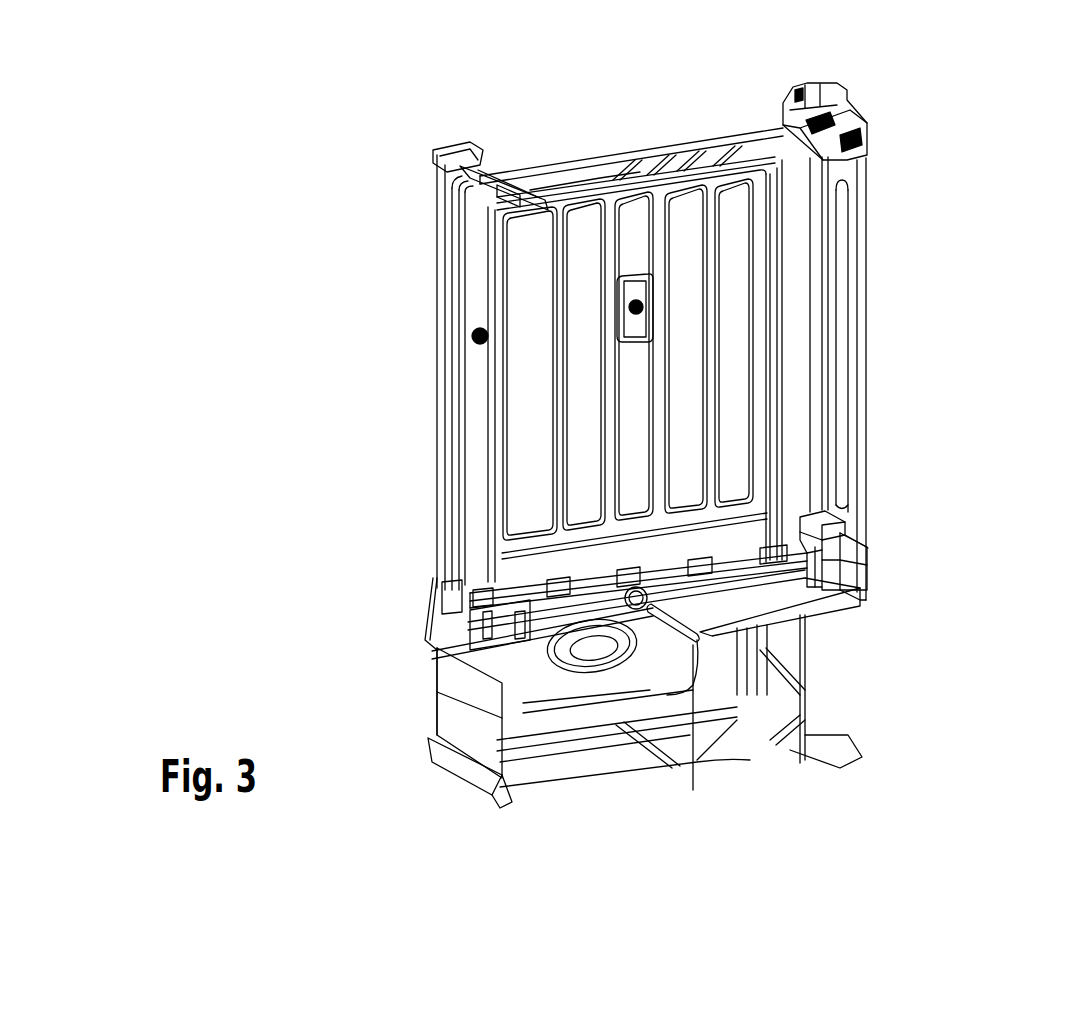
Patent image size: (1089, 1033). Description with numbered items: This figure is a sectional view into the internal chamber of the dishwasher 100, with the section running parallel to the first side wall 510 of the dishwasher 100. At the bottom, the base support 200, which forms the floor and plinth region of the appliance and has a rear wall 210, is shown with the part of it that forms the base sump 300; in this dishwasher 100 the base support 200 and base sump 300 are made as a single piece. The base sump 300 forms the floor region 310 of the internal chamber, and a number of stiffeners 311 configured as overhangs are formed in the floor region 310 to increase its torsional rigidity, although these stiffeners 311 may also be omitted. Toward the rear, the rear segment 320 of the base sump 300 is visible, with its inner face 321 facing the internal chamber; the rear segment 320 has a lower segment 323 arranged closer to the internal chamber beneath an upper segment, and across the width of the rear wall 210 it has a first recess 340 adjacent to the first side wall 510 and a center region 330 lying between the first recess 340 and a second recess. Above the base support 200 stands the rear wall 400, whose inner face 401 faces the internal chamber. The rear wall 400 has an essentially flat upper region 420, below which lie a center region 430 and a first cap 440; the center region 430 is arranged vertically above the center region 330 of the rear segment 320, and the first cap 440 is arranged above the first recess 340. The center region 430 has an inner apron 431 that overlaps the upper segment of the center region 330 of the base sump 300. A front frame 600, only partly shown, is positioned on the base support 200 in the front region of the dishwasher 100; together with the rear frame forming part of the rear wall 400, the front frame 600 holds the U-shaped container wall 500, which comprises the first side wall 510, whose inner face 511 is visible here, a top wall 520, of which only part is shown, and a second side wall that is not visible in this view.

The dishwasher 100 is at (314, 127).
The base support 200 is at (790, 647).
The rear wall of the base support 210 is at (643, 693).
The base sump 300 is at (742, 640).
The floor region 310 is at (638, 577).
The stiffeners 311 is at (693, 660).
The rear segment 320 is at (853, 582).
The inner face of the rear segment 321 is at (852, 583).
The lower segment 323 is at (811, 559).
The center region of the rear segment 330 is at (814, 551).
The first recess 340 is at (833, 568).
The rear wall 400 is at (853, 368).
The inner face of the rear wall 401 is at (459, 377).
The upper region 420 is at (824, 378).
The center region of the rear wall 430 is at (852, 552).
The inner apron 431 is at (854, 561).
The first cap 440 is at (832, 526).
The container wall 500 is at (628, 233).
The first side wall 510 is at (631, 165).
The inner face of the first side wall 511 is at (677, 163).
The top wall 520 is at (602, 177).
The front frame 600 is at (494, 150).